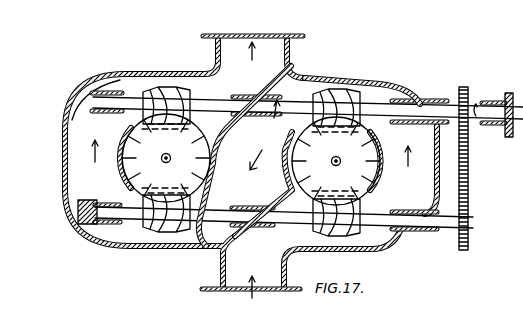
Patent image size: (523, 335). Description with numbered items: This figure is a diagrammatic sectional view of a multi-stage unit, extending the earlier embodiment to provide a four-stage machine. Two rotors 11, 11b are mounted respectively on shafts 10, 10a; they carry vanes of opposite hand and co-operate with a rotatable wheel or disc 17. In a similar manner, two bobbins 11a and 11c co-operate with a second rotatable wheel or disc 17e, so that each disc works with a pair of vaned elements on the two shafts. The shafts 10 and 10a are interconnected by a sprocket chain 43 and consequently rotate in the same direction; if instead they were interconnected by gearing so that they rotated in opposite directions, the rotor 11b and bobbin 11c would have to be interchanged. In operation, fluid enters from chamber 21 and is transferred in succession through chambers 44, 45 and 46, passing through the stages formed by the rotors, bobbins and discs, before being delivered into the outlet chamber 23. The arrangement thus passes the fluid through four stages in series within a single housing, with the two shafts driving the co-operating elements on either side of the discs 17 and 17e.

The shaft 10 is at (425, 222).
The shaft 10a is at (420, 108).
The rotor 11 is at (341, 236).
The bobbin 11a is at (167, 212).
The rotor 11b is at (340, 88).
The bobbin 11c is at (177, 84).
The rotatable wheel or disc 17 is at (358, 150).
The rotatable wheel or disc 17e is at (130, 168).
The chamber 21 is at (264, 272).
The outlet chamber 23 is at (268, 47).
The sprocket chain 43 is at (468, 172).
The chamber 44 is at (420, 192).
The chamber 45 is at (236, 186).
The chamber 46 is at (82, 153).